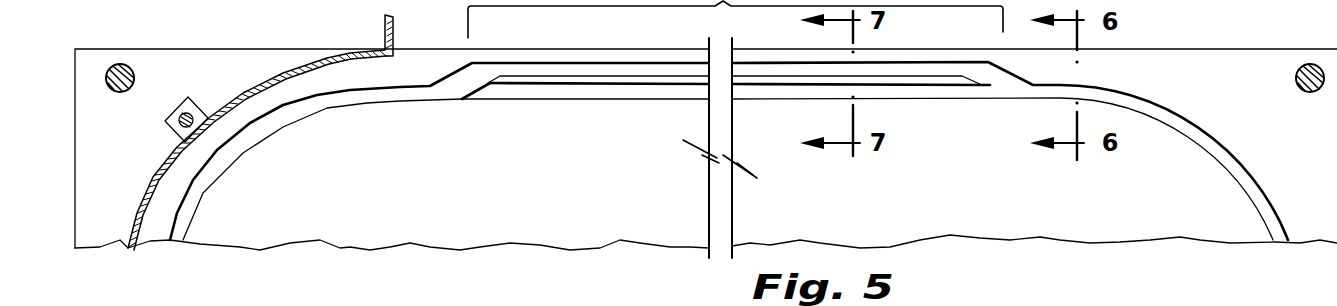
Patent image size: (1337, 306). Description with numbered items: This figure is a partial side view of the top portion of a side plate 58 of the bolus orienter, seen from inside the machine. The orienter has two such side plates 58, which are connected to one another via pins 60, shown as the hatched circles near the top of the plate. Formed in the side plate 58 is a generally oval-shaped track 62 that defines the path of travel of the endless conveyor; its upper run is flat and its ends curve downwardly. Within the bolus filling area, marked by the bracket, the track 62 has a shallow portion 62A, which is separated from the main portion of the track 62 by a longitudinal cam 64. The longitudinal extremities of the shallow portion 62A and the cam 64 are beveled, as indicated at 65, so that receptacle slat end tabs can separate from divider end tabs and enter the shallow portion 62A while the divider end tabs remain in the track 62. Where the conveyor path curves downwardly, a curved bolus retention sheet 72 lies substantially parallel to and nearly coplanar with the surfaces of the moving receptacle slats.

The side plate 58 is at (1320, 223).
The pin 60 is at (132, 72).
The track 62 is at (250, 147).
The shallow portion 62A is at (922, 93).
The longitudinal cam 64 is at (917, 77).
The bevel 65 is at (470, 92).
The bolus retention sheet 72 is at (255, 85).